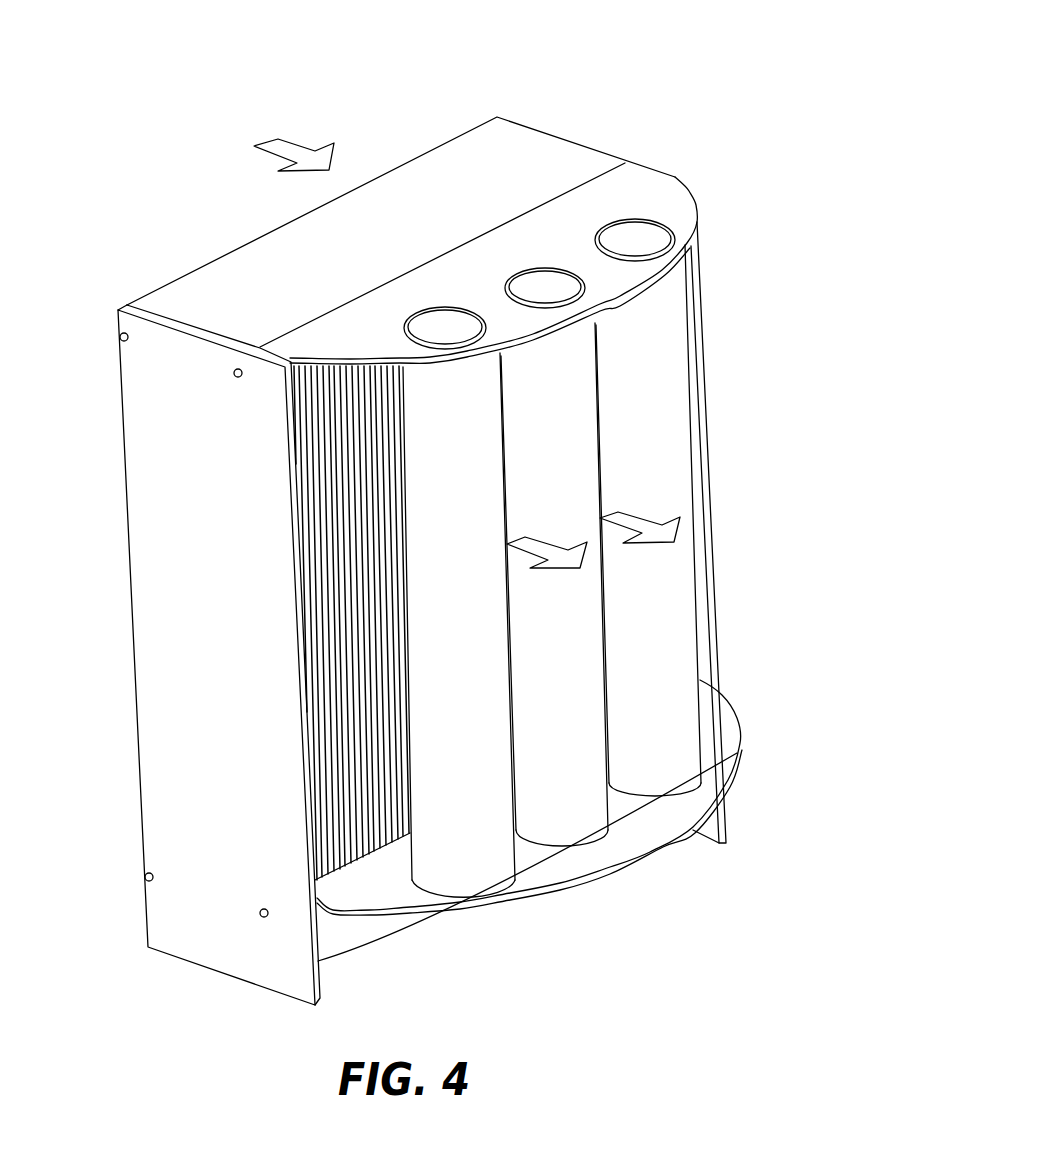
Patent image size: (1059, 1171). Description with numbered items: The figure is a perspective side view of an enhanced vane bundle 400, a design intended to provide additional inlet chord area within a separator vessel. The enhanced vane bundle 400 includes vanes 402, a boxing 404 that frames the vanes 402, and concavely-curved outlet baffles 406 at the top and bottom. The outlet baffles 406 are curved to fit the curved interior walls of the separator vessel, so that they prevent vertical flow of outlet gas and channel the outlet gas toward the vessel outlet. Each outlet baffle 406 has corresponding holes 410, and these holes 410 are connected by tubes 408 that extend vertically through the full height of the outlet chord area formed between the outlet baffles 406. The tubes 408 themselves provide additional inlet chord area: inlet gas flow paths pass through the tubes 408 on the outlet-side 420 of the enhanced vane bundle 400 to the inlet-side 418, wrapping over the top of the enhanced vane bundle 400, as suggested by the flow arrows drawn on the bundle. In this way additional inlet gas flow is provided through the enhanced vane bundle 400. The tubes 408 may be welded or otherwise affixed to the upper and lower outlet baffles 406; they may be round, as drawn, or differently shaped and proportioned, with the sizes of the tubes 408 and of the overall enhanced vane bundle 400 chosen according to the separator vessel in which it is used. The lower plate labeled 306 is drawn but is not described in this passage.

The enhanced vane bundle 400 is at (692, 36).
The vanes 402 is at (353, 712).
The boxing 404 is at (210, 518).
The concavely-curved outlet baffles 406 is at (650, 188).
The tubes 408 is at (652, 370).
The holes 410 is at (635, 240).
The inlet-side 418 is at (205, 231).
The outlet-side 420 is at (722, 545).
The base plate 306 is at (663, 847).